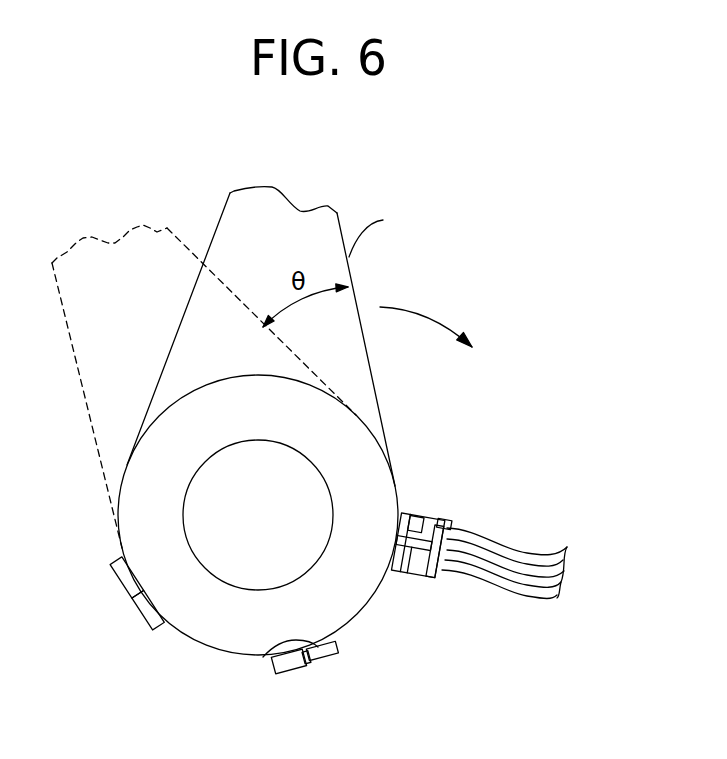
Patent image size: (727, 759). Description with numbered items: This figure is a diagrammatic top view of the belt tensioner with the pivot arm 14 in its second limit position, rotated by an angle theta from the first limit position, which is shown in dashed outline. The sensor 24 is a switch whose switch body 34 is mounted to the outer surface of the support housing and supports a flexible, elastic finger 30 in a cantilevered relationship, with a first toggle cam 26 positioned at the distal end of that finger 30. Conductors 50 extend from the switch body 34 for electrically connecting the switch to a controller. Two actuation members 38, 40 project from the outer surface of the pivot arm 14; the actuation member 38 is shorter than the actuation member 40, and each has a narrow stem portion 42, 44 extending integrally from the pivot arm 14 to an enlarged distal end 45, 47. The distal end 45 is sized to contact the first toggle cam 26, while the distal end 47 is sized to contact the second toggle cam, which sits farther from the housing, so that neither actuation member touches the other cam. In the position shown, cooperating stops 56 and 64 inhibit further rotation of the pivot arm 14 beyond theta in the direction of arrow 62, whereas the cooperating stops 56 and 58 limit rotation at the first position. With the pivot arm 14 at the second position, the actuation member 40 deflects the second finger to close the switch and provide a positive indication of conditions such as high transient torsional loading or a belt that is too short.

The pivot arm 14 is at (377, 390).
The sensor 24 is at (430, 515).
The first toggle cam 26 is at (412, 518).
The flexible, elastic finger 30 is at (408, 562).
The switch body 34 is at (423, 580).
The actuation member 38 is at (340, 660).
The actuation member 40 is at (447, 518).
The narrow stem portion 42 is at (263, 656).
The narrow stem portion 44 is at (402, 540).
The enlarged distal end 45 is at (317, 667).
The enlarged distal end 47 is at (467, 527).
The conductors 50 is at (537, 602).
The cooperating stop 56 is at (147, 623).
The cooperating stop 58 is at (280, 673).
The arrow 62 is at (430, 315).
The cooperating stop 64 is at (127, 583).